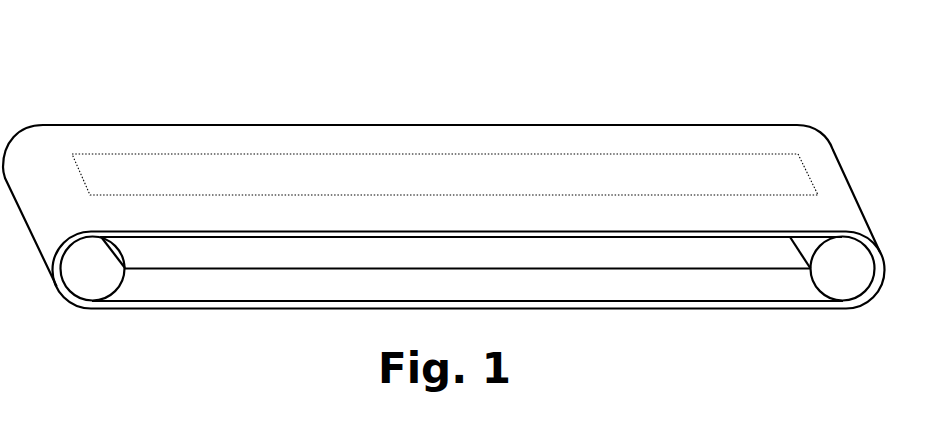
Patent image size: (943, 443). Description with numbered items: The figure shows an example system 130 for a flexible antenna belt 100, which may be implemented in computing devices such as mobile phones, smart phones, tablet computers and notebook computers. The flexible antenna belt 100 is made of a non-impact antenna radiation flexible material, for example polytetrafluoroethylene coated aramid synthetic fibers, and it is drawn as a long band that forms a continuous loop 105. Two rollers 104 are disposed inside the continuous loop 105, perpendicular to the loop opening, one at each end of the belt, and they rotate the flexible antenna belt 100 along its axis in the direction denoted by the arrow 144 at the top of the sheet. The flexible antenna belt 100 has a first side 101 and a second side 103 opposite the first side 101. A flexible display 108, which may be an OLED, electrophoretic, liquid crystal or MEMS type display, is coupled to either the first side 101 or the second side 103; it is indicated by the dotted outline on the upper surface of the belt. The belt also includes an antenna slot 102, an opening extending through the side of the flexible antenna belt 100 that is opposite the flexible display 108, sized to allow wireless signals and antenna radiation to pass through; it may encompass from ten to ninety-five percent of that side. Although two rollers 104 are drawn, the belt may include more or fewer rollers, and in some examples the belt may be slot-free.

The flexible antenna belt 100 is at (525, 125).
The first side 101 is at (270, 311).
The antenna slot 102 is at (622, 252).
The second side 103 is at (264, 145).
The rollers 104 is at (95, 282).
The continuous loop 105 is at (733, 282).
The flexible display 108 is at (390, 175).
The system 130 is at (692, 64).
The arrow 144 is at (83, 30).